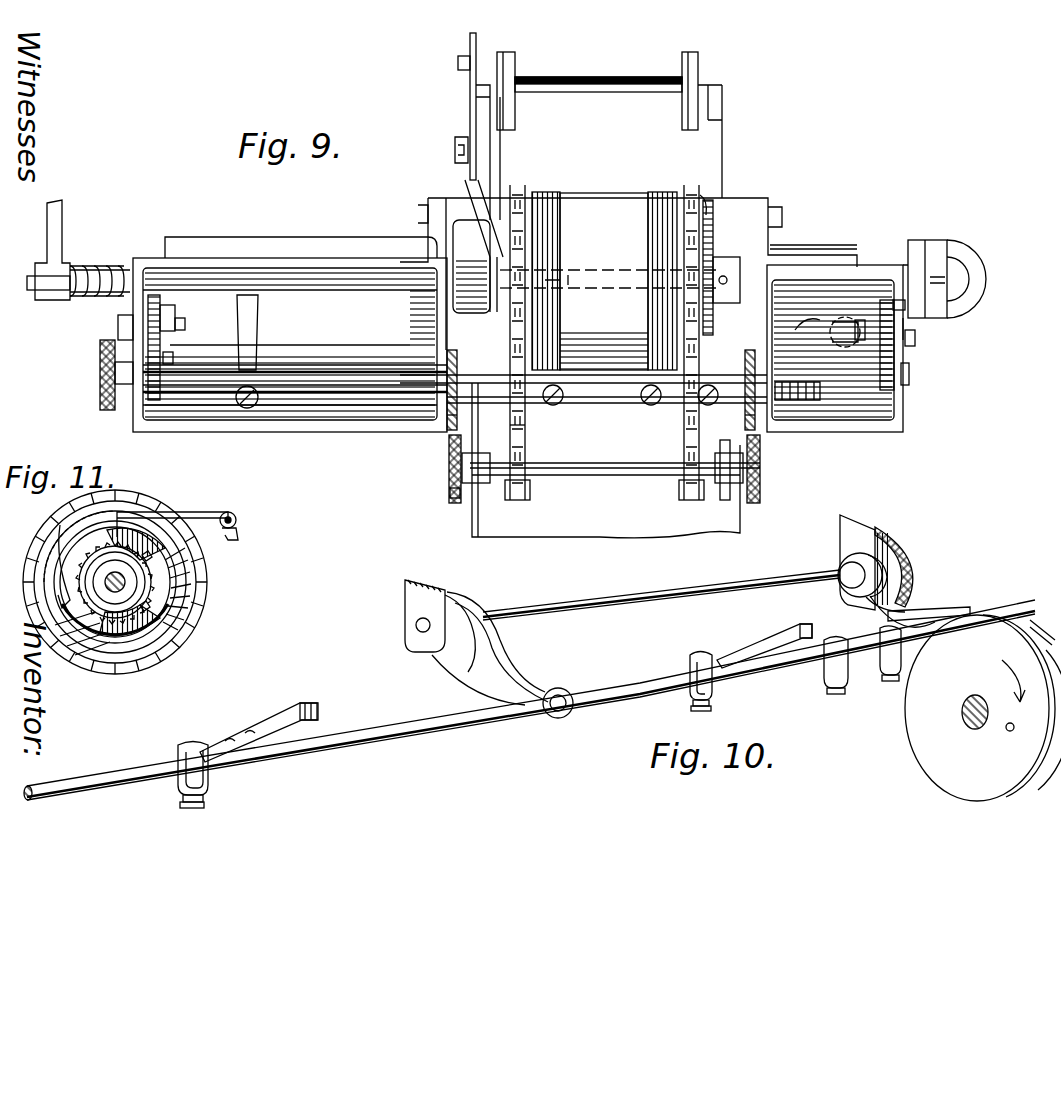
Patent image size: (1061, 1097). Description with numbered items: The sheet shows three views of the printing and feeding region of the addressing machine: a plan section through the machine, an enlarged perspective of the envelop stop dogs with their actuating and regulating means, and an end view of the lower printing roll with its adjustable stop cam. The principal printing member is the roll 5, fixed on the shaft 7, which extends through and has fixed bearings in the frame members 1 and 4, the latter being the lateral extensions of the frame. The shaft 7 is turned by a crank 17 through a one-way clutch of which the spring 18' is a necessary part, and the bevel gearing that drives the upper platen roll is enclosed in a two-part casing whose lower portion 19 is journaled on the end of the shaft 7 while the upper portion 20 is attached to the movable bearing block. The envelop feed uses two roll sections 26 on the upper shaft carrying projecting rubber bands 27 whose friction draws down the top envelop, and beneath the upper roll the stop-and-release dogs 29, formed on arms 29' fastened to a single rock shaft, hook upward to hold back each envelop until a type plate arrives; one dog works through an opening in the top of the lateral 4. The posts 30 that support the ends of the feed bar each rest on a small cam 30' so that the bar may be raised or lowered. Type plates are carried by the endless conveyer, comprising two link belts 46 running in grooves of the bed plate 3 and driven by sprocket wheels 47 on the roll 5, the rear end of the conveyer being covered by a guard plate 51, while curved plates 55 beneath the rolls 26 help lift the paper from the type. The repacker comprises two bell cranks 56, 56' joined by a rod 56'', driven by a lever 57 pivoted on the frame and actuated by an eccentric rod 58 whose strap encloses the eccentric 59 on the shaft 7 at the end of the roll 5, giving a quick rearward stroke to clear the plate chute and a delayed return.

In FIG. 9, the frame member 1 is at (445, 415).
In FIG. 9, the bed plate 3 is at (606, 460).
In FIG. 9, the lateral extension 4 is at (310, 425).
In FIG. 9, the printing roll 5 is at (600, 195).
In FIG. 9, the shaft 7 is at (410, 285).
In FIG. 11, the shaft 7 is at (108, 589).
In FIG. 10, the shaft 7 is at (962, 718).
In FIG. 9, the crank 17 is at (62, 228).
In FIG. 9, the spring 18' is at (103, 263).
In FIG. 9, the lower casing portion 19 is at (920, 252).
In FIG. 9, the upper casing portion 20 is at (966, 268).
In FIG. 9, the roll section 26 is at (792, 255).
In FIG. 9, the rubber band 27 is at (822, 255).
In FIG. 10, the stop-and-release dog 29 is at (639, 655).
In FIG. 9, the arm 29' is at (477, 407).
In FIG. 10, the arm 29' is at (457, 712).
In FIG. 9, the post 30 is at (537, 345).
In FIG. 9, the cam 30' is at (510, 321).
In FIG. 9, the link belt 46 is at (528, 464).
In FIG. 9, the sprocket wheel 47 is at (520, 200).
In FIG. 11, the sprocket wheel 47 is at (92, 657).
In FIG. 9, the guard plate 51 is at (650, 283).
In FIG. 9, the curved plate 55 is at (267, 237).
In FIG. 9, the bell crank 56 is at (521, 87).
In FIG. 9, the bell crank 56' is at (711, 91).
In FIG. 9, the rod 56'' is at (598, 97).
In FIG. 9, the lever 57 is at (470, 82).
In FIG. 9, the eccentric rod 58 is at (462, 160).
In FIG. 9, the eccentric 59 is at (470, 315).